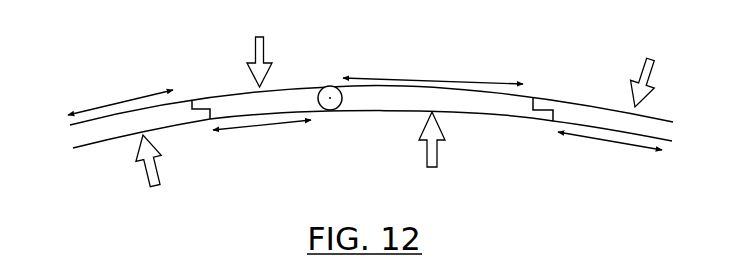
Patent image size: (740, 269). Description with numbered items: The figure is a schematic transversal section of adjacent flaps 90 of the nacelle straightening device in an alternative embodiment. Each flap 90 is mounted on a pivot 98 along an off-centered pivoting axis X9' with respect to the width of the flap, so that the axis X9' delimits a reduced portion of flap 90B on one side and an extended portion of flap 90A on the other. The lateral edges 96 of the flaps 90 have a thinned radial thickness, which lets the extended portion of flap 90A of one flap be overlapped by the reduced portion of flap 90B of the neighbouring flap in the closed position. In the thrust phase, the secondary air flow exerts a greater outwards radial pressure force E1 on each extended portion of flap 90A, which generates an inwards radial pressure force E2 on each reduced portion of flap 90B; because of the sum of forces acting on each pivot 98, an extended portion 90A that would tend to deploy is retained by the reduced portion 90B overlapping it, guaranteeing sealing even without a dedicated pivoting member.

The flap 90 is at (72, 156).
The extended portion of flap 90A is at (295, 86).
The reduced portion of flap 90B is at (437, 145).
The lateral edge 96 is at (192, 100).
The pivot 98 is at (331, 86).
The outwards radial pressure force E1 is at (297, 150).
The inwards radial pressure force E2 is at (444, 74).
The off-centered pivoting axis X9' is at (347, 124).